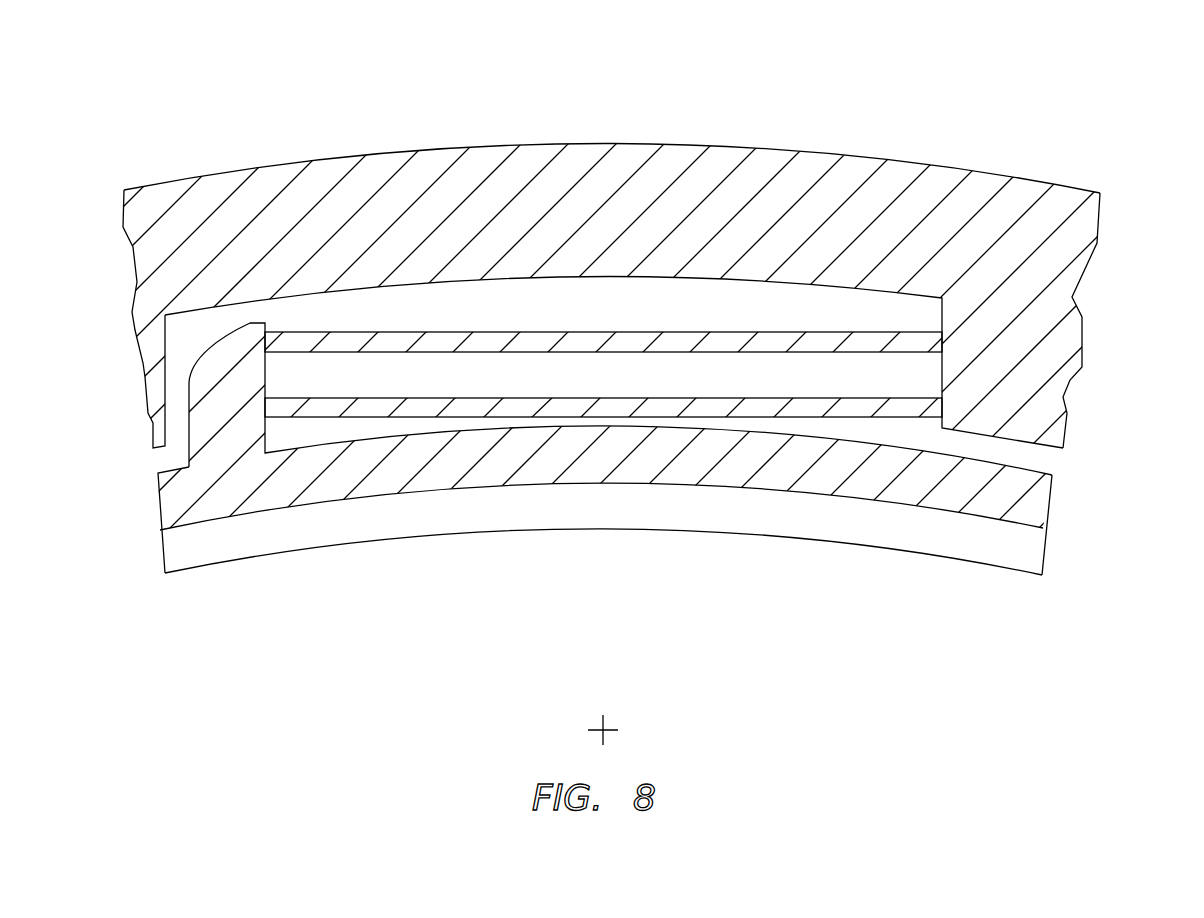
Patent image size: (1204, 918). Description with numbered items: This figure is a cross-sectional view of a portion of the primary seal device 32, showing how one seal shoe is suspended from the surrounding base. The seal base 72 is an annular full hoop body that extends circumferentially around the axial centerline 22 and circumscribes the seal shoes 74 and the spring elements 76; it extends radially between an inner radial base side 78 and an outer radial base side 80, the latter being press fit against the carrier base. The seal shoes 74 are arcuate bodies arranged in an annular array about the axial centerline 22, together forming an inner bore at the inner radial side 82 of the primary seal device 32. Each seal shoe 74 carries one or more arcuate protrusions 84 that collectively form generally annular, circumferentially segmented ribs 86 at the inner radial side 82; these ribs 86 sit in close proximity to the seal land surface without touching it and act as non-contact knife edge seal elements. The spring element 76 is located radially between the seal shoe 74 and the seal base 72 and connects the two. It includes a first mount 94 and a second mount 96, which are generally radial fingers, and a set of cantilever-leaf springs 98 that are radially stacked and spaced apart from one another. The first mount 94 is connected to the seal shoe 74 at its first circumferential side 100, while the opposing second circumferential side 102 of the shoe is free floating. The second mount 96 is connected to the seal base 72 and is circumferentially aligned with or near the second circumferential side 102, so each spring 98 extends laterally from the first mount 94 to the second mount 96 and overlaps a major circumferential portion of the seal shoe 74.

The axial centerline 22 is at (610, 723).
The primary seal device 32 is at (1022, 128).
The seal base 72 is at (487, 143).
The seal shoe 74 is at (155, 535).
The spring element 76 is at (363, 419).
The inner radial base side 78 is at (840, 288).
The outer radial base side 80 is at (863, 158).
The inner radial side 82 is at (697, 542).
The arcuate protrusion 84 is at (248, 565).
The rib 86 is at (601, 506).
The first mount 94 is at (170, 402).
The second mount 96 is at (1053, 388).
The spring 98 is at (627, 331).
The first circumferential side 100 is at (158, 510).
The second circumferential side 102 is at (1052, 508).